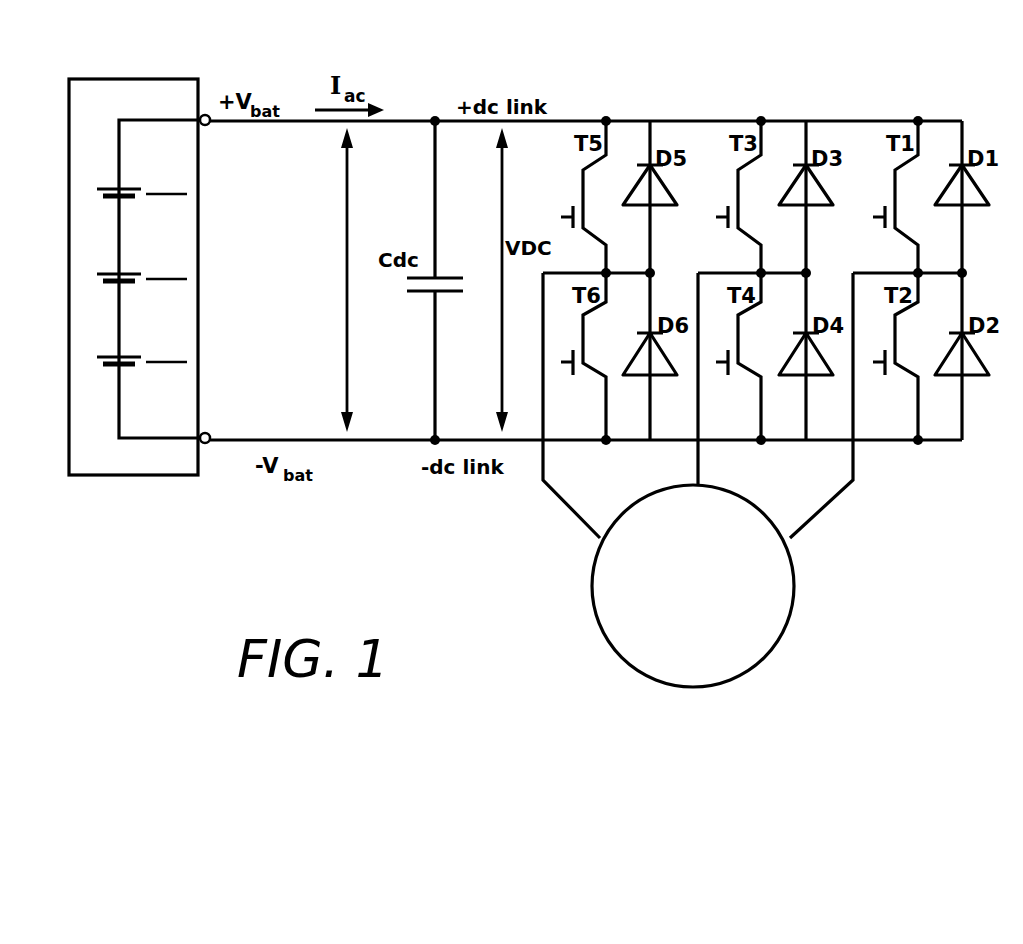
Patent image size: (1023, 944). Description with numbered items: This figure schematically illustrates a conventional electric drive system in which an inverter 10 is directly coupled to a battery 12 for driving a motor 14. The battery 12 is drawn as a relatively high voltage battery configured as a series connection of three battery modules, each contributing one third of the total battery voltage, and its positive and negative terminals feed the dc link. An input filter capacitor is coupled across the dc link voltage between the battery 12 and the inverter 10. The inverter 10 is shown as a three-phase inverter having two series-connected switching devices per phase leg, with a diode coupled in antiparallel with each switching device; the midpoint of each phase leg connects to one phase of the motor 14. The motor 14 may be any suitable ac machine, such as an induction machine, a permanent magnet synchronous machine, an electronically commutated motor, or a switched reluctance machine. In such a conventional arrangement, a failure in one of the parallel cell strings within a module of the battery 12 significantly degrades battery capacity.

The inverter 10 is at (946, 74).
The battery 12 is at (133, 476).
The motor 14 is at (675, 645).